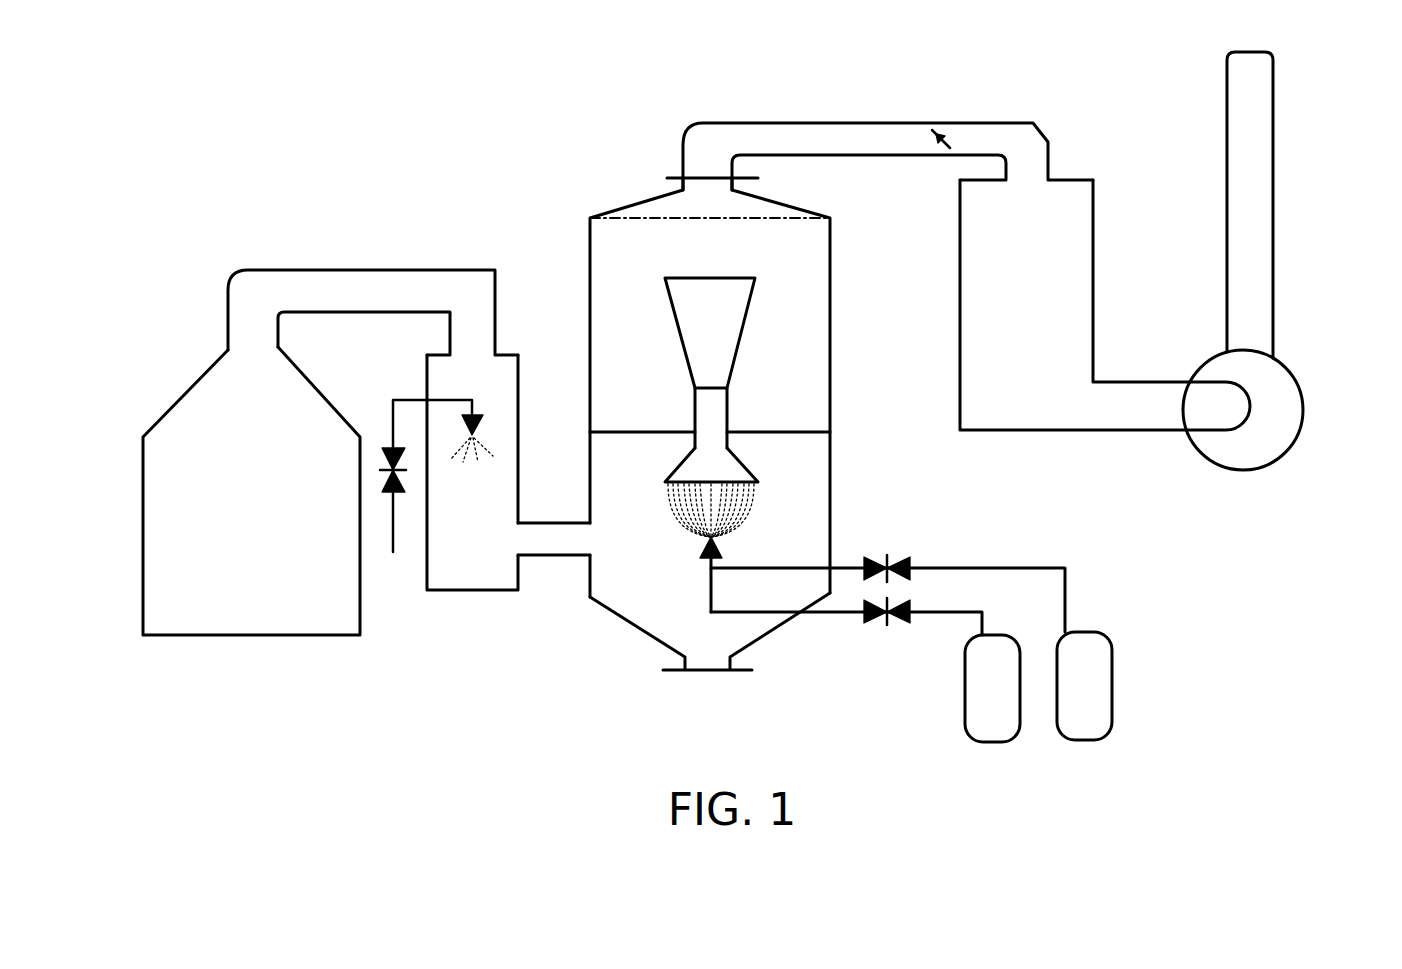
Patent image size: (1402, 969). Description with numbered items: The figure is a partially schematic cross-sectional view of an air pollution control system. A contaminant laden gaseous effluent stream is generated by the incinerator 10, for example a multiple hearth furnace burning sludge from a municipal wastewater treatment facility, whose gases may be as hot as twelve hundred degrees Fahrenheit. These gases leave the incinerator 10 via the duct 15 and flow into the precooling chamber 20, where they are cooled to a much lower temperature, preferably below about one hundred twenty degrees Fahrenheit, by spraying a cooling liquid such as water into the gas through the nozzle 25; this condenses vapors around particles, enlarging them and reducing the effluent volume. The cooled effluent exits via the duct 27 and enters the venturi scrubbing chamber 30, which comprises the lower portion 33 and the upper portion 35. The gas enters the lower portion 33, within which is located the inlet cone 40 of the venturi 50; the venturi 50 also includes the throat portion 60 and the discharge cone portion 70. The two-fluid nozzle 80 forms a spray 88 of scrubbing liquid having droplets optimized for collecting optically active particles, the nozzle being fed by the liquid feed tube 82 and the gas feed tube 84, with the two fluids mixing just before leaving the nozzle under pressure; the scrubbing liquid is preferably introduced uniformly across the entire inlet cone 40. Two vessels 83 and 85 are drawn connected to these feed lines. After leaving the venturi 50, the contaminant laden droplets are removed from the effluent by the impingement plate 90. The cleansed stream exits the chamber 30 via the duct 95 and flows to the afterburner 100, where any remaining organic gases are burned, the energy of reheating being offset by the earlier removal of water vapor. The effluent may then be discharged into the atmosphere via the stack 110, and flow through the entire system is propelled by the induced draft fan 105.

The incinerator 10 is at (175, 519).
The duct 15 is at (347, 288).
The precooling chamber 20 is at (477, 568).
The nozzle 25 is at (482, 425).
The duct 27 is at (560, 543).
The venturi scrubbing chamber 30 is at (670, 615).
The lower portion 33 is at (808, 500).
The upper portion 35 is at (808, 280).
The inlet cone 40 is at (690, 467).
The venturi 50 is at (718, 380).
The throat portion 60 is at (705, 412).
The discharge cone portion 70 is at (705, 336).
The two-fluid nozzle 80 is at (722, 548).
The liquid feed tube 82 is at (945, 565).
The gas tank 83 is at (1090, 705).
The gas feed tube 84 is at (830, 615).
The gas tank 85 is at (977, 712).
The spray 88 is at (676, 527).
The impingement plate 90 is at (688, 222).
The duct 95 is at (818, 138).
The afterburner 100 is at (1007, 320).
The induced draft fan 105 is at (1260, 427).
The stack 110 is at (1248, 293).